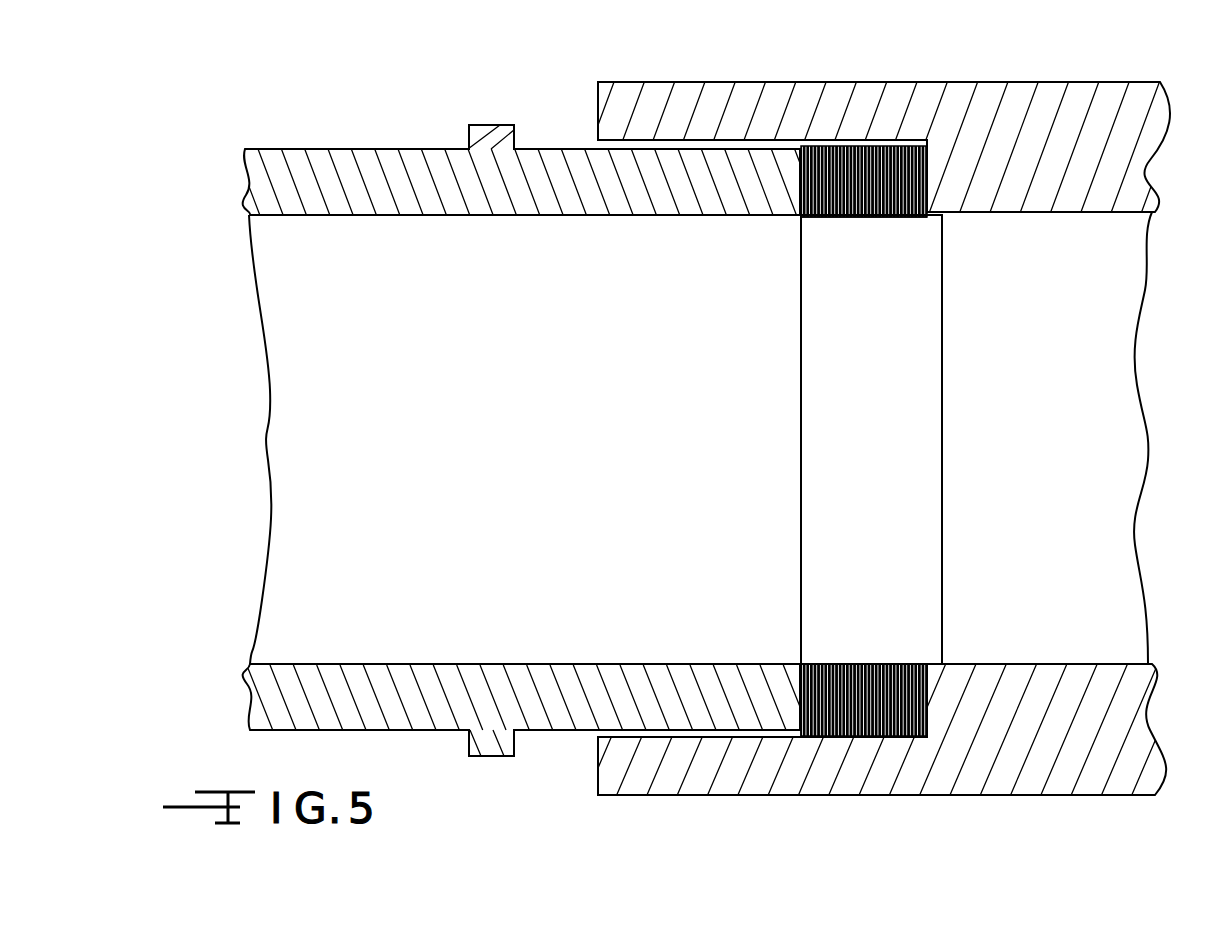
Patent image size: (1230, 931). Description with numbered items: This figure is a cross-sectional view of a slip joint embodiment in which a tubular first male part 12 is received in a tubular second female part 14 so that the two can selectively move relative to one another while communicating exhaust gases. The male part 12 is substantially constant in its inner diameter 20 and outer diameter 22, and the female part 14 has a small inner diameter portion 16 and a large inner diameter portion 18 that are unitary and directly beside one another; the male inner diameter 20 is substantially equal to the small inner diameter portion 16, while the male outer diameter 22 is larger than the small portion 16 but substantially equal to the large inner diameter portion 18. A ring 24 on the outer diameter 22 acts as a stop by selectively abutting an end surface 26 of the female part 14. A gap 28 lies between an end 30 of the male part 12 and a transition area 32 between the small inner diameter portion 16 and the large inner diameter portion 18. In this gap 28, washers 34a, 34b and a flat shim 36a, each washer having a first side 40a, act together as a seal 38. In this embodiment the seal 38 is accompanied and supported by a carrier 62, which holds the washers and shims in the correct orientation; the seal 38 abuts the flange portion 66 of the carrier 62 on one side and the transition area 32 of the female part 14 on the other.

The first male part 12 is at (292, 132).
The second female part 14 is at (1150, 82).
The small inner diameter portion 16 is at (1076, 659).
The large inner diameter portion 18 is at (646, 748).
The inner diameter 20 is at (306, 221).
The outer diameter 22 is at (369, 143).
The ring 24 is at (482, 123).
The end surface 26 is at (592, 118).
The gap 28 is at (905, 144).
The end 30 is at (800, 712).
The transition area 32 is at (927, 693).
The washer 34a is at (800, 230).
The washer 34b is at (806, 218).
The flat shim 36a is at (805, 218).
The seal 38 is at (920, 662).
The first side 40a is at (800, 690).
The carrier 62 is at (942, 503).
The flange portion 66 is at (800, 652).